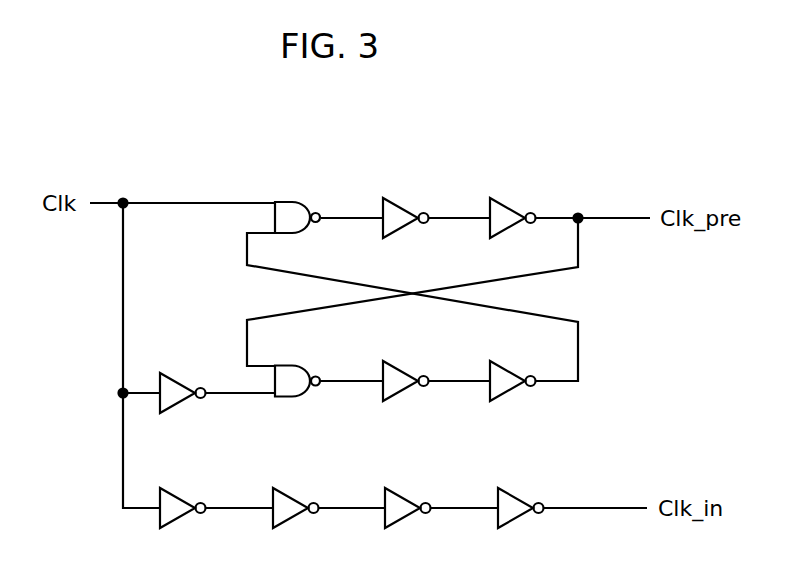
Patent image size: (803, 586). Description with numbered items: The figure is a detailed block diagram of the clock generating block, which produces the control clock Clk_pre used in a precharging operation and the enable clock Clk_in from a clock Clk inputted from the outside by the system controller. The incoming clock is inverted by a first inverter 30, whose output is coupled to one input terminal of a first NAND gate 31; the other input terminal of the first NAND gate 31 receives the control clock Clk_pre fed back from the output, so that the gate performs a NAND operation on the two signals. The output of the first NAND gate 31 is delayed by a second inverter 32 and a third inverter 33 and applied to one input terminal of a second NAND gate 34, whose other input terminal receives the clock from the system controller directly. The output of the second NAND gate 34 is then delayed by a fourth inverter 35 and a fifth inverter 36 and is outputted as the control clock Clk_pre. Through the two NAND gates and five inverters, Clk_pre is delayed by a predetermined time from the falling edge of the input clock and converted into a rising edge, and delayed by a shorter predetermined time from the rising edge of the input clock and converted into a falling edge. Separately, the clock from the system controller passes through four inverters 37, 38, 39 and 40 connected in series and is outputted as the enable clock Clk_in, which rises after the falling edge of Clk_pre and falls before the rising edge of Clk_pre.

The first inverter 30 is at (183, 379).
The first NAND gate 31 is at (299, 365).
The second inverter 32 is at (405, 367).
The third inverter 33 is at (512, 367).
The second NAND gate 34 is at (299, 200).
The fourth inverter 35 is at (405, 204).
The fifth inverter 36 is at (512, 204).
The inverter 37 is at (183, 494).
The inverter 38 is at (295, 494).
The inverter 39 is at (408, 494).
The inverter 40 is at (521, 494).